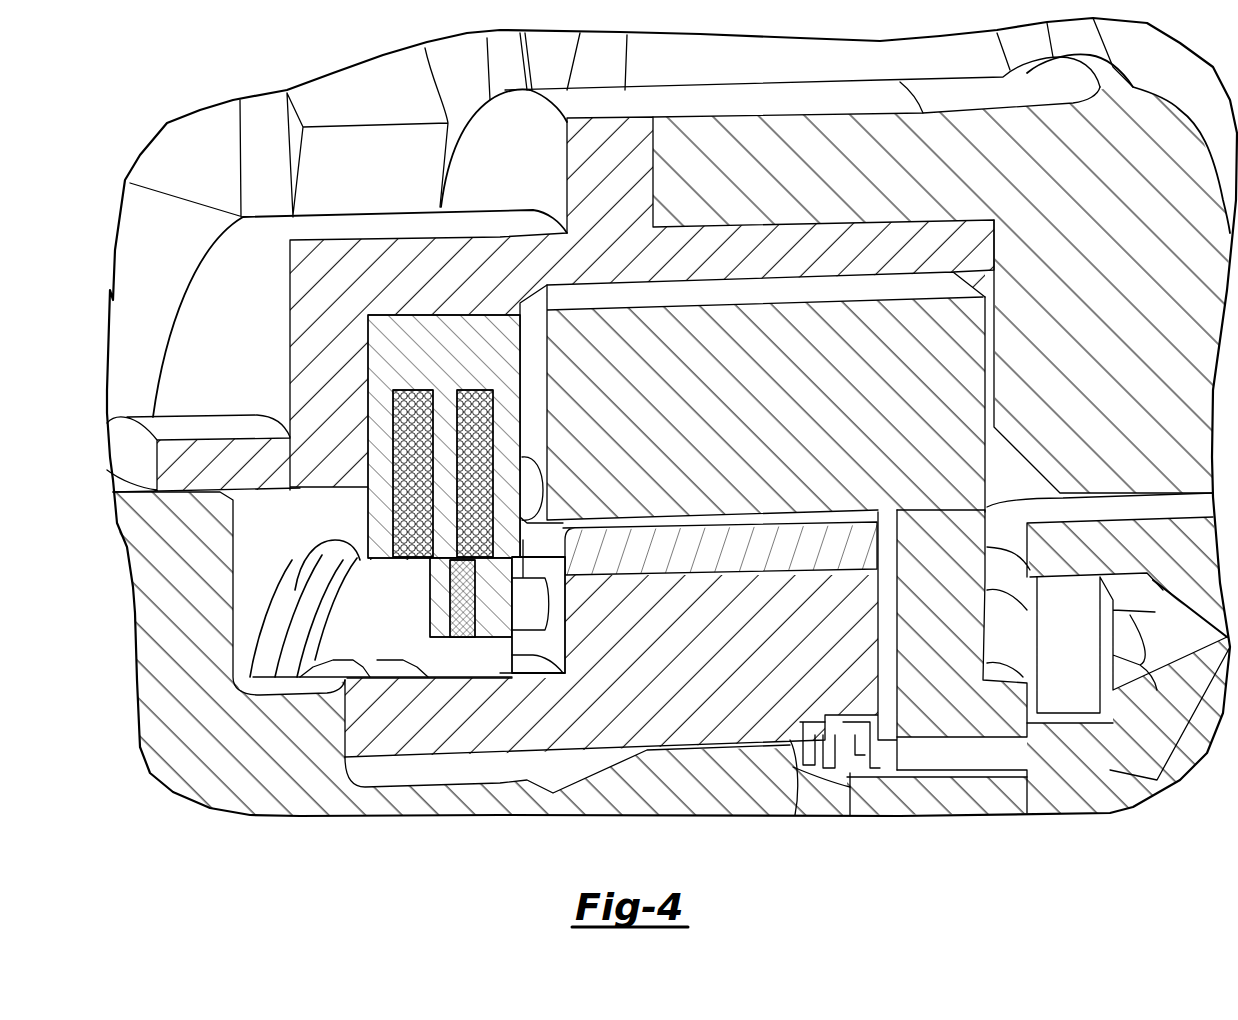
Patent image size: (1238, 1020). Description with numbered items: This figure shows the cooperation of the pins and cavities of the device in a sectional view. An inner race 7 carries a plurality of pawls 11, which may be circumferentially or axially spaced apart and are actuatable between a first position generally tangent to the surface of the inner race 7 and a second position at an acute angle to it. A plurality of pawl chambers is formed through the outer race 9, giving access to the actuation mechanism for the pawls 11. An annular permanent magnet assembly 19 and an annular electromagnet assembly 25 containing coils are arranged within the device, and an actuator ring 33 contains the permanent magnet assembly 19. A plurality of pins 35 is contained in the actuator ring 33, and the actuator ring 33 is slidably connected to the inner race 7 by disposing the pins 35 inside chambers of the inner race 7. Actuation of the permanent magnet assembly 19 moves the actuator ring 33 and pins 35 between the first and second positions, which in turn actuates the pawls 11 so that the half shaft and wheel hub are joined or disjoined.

The inner race 7 is at (477, 725).
The outer race 9 is at (940, 713).
The pawls 11 is at (750, 555).
The permanent magnet assembly 19 is at (403, 600).
The electromagnet assembly 25 is at (285, 587).
The actuator ring 33 is at (487, 660).
The pins 35 is at (528, 610).